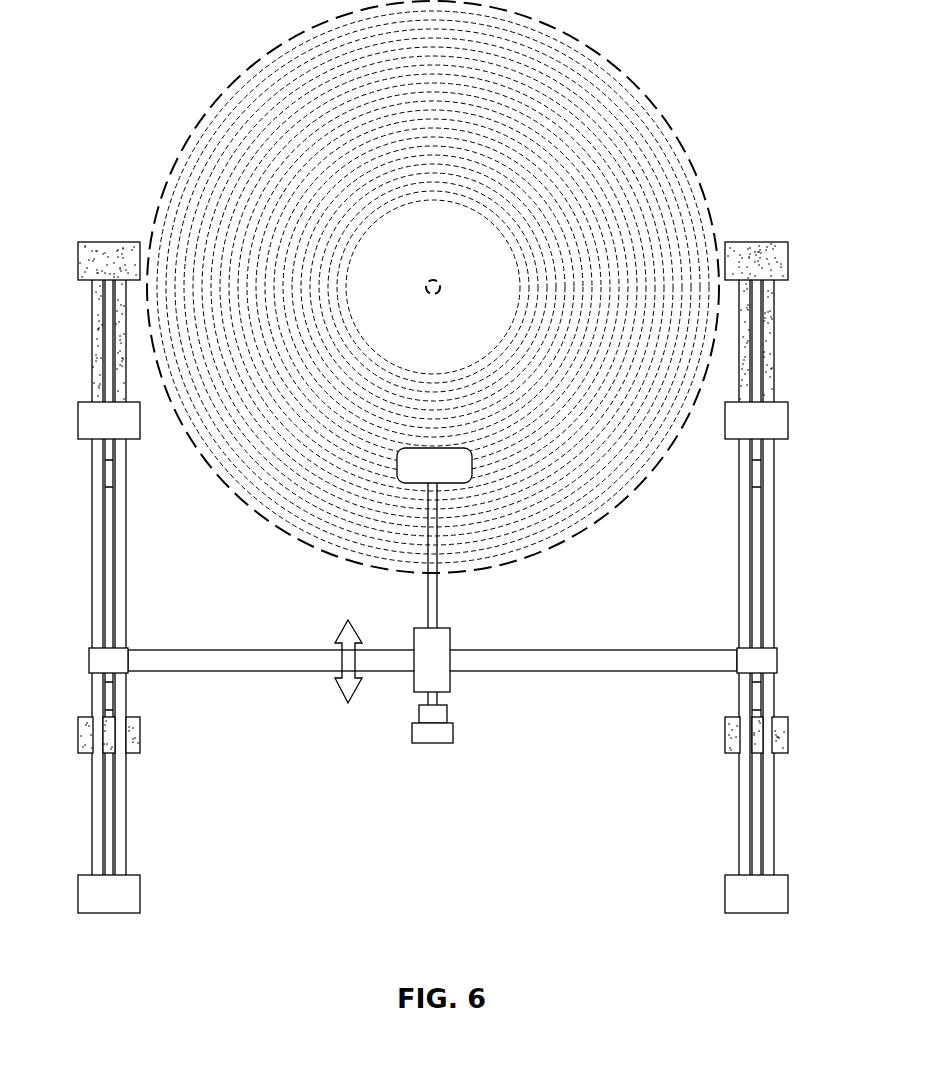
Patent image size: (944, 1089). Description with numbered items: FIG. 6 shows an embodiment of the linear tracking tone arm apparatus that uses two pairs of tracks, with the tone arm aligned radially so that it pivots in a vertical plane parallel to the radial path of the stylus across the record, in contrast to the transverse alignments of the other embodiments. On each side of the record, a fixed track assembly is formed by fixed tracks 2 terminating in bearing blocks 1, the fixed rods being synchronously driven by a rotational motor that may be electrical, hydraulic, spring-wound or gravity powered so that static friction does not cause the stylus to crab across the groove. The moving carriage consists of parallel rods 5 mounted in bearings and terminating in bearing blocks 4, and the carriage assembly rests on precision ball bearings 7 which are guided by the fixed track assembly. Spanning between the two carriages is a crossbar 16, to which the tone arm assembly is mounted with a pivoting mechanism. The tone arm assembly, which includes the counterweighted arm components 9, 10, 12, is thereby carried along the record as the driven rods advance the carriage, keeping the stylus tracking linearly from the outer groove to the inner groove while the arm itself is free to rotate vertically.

The bearing block 1 is at (119, 262).
The fixed track 2 is at (120, 350).
The bearing block 4 is at (123, 422).
The parallel rod 5 is at (122, 788).
The precision ball bearing 7 is at (108, 476).
The tone arm assembly component 9 is at (433, 575).
The tone arm assembly component 10 is at (430, 462).
The tone arm assembly component 12 is at (440, 733).
The crossbar 16 is at (607, 663).